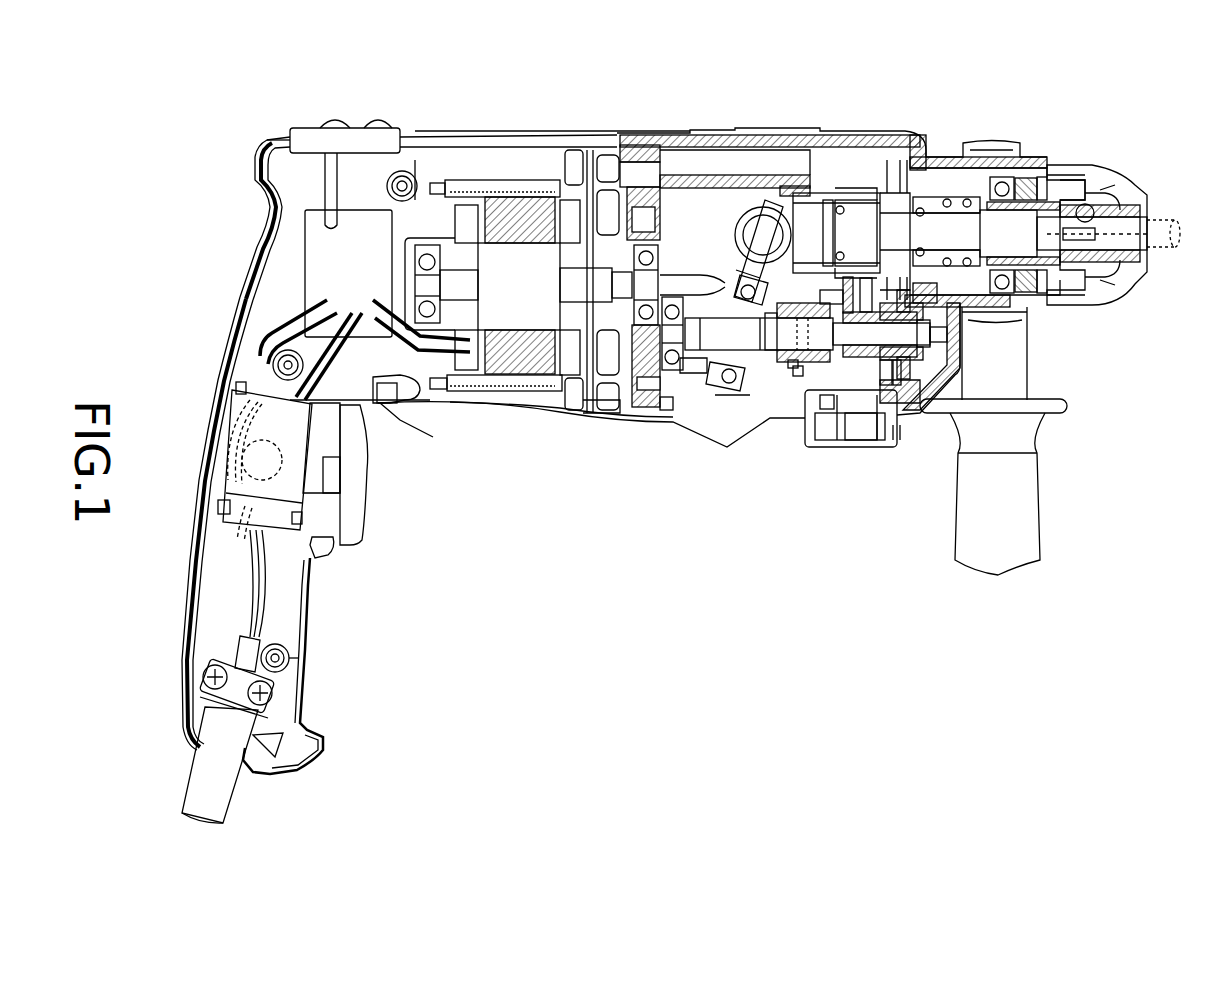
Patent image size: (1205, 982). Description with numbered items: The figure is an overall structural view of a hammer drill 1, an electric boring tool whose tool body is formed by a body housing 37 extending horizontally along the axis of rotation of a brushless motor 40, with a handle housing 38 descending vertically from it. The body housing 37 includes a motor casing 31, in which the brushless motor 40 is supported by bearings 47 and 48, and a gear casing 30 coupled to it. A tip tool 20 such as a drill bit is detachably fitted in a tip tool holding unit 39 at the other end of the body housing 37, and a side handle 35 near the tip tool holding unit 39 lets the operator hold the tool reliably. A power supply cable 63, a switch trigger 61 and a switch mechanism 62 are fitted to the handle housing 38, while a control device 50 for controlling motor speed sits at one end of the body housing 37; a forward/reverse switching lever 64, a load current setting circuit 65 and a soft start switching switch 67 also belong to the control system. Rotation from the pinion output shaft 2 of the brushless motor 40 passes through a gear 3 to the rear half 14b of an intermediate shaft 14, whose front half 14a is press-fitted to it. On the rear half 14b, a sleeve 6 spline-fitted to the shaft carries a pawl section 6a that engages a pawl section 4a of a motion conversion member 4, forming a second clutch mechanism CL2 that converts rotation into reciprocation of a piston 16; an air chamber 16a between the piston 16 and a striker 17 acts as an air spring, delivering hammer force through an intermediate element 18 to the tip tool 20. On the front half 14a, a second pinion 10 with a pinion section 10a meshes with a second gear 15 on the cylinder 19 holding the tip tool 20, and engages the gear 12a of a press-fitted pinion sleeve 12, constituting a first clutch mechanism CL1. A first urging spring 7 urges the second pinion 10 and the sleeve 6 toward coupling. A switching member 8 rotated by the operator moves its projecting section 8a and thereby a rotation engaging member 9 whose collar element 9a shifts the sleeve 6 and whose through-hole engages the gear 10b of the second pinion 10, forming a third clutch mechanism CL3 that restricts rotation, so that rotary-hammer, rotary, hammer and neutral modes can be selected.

The hammer drill 1 is at (278, 96).
The pinion output shaft 2 is at (690, 280).
The gear 3 is at (697, 365).
The motion conversion member 4 is at (767, 360).
The pawl section 4a is at (780, 355).
The sleeve 6 is at (778, 370).
The pawl section 6a is at (781, 395).
The first urging spring 7 is at (827, 300).
The switching member 8 is at (843, 423).
The projecting section 8a is at (853, 370).
The rotation engaging member 9 is at (867, 370).
The collar element 9a is at (797, 368).
The second pinion 10 is at (891, 337).
The pinion section 10a is at (877, 300).
The gear of the collar element 10b is at (843, 428).
The pinion sleeve 12 is at (932, 347).
The gear 12a is at (908, 390).
The intermediate shaft 14 is at (748, 340).
The front half of the intermediate shaft 14a is at (800, 376).
The rear half of the intermediate shaft 14b is at (725, 370).
The second gear 15 is at (898, 280).
The piston 16 is at (823, 215).
The air chamber 16a is at (830, 215).
The striker 17 is at (868, 205).
The intermediate element 18 is at (1025, 225).
The cylinder 19 is at (990, 183).
The tip tool 20 is at (1155, 222).
The gear casing 30 is at (755, 134).
The motor casing 31 is at (552, 134).
The side handle 35 is at (1040, 490).
The body housing 37 is at (526, 126).
The handle housing 38 is at (184, 516).
The tip tool holding unit 39 is at (1100, 165).
The brushless motor 40 is at (517, 320).
The bearing 47 is at (426, 260).
The bearing 48 is at (661, 230).
The control device 50 is at (305, 258).
The switch trigger 61 is at (370, 490).
The switch mechanism 62 is at (248, 420).
The power supply cable 63 is at (186, 770).
The forward/reverse switching lever 64 is at (405, 420).
The load current setting circuit 65 is at (381, 120).
The soft start switching switch 67 is at (339, 120).
The first clutch mechanism CL1 is at (890, 468).
The second clutch mechanism CL2 is at (810, 498).
The third clutch mechanism CL3 is at (825, 498).